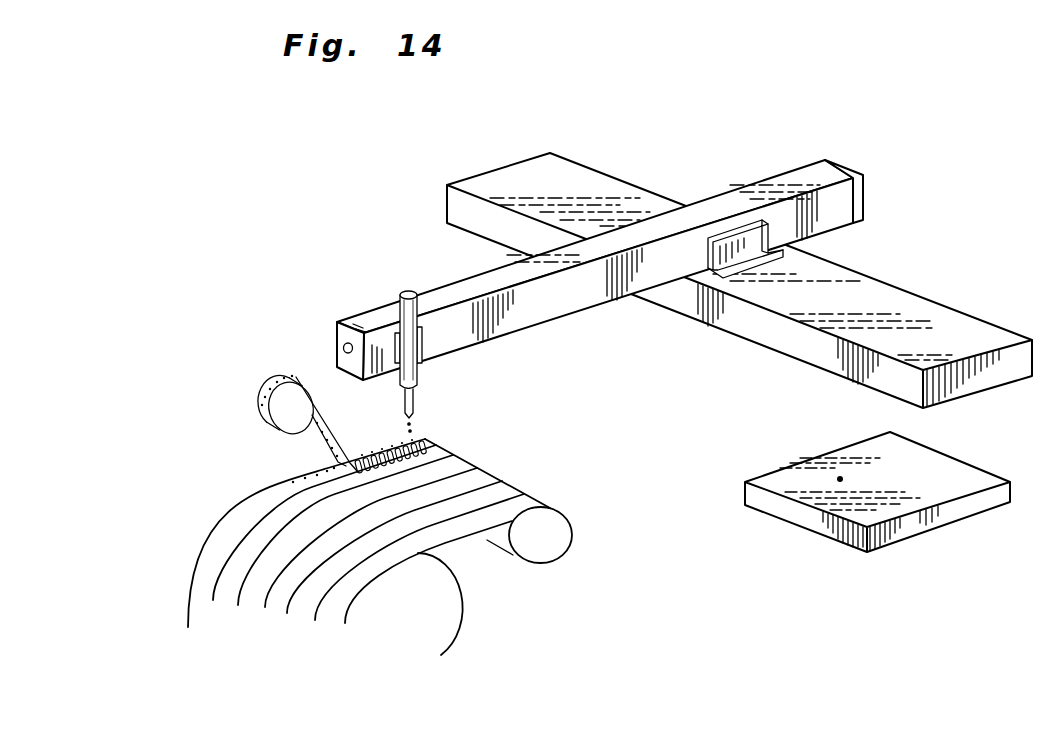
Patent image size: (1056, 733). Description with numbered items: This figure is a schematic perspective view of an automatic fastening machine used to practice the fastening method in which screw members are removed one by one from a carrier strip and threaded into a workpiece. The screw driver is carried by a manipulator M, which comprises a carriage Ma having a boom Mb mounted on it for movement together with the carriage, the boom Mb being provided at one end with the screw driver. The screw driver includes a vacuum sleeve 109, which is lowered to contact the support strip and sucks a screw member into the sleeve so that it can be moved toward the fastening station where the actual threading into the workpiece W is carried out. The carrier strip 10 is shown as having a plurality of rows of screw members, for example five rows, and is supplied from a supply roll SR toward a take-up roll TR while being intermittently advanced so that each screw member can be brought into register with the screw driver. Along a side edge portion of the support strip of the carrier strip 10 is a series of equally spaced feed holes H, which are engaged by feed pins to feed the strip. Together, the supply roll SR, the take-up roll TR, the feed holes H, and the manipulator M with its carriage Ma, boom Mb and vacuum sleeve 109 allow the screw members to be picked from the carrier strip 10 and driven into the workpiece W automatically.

The manipulator M is at (696, 327).
The carriage Ma is at (943, 318).
The boom Mb is at (596, 295).
The vacuum sleeve 109 is at (418, 398).
The carrier strip 10 is at (224, 509).
The feed holes H is at (281, 485).
The take-up roll TR is at (558, 548).
The supply roll SR is at (450, 637).
The workpiece W is at (966, 512).